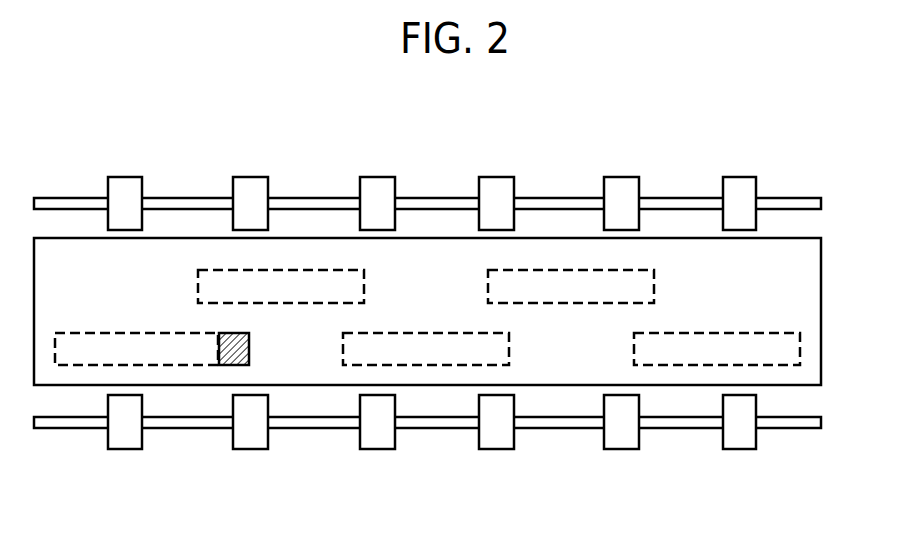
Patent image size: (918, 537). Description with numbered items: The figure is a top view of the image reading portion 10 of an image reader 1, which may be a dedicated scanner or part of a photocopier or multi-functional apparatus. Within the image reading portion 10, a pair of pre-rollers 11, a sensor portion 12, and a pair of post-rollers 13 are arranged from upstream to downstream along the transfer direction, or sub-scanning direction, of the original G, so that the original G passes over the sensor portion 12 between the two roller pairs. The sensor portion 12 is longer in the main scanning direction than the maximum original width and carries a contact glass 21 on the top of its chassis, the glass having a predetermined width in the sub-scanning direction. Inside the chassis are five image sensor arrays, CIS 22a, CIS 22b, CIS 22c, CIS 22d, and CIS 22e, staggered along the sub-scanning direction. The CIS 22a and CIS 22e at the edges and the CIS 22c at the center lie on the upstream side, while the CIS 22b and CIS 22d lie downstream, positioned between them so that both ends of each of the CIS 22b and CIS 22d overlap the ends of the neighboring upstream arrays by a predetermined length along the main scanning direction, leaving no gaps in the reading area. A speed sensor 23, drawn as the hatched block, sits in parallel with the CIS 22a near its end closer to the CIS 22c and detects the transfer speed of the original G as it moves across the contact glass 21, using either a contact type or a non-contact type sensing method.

The image reader 1 is at (695, 141).
The image reading portion 10 is at (824, 232).
The pair of pre-rollers 11 is at (768, 440).
The sensor portion 12 is at (827, 278).
The pair of post-rollers 13 is at (764, 186).
The contact glass 21 is at (822, 310).
The CIS 22a is at (90, 332).
The CIS 22b is at (197, 287).
The CIS 22c is at (378, 332).
The CIS 22d is at (656, 287).
The CIS 22e is at (700, 332).
The speed sensor 23 is at (250, 346).
The original G is at (434, 435).